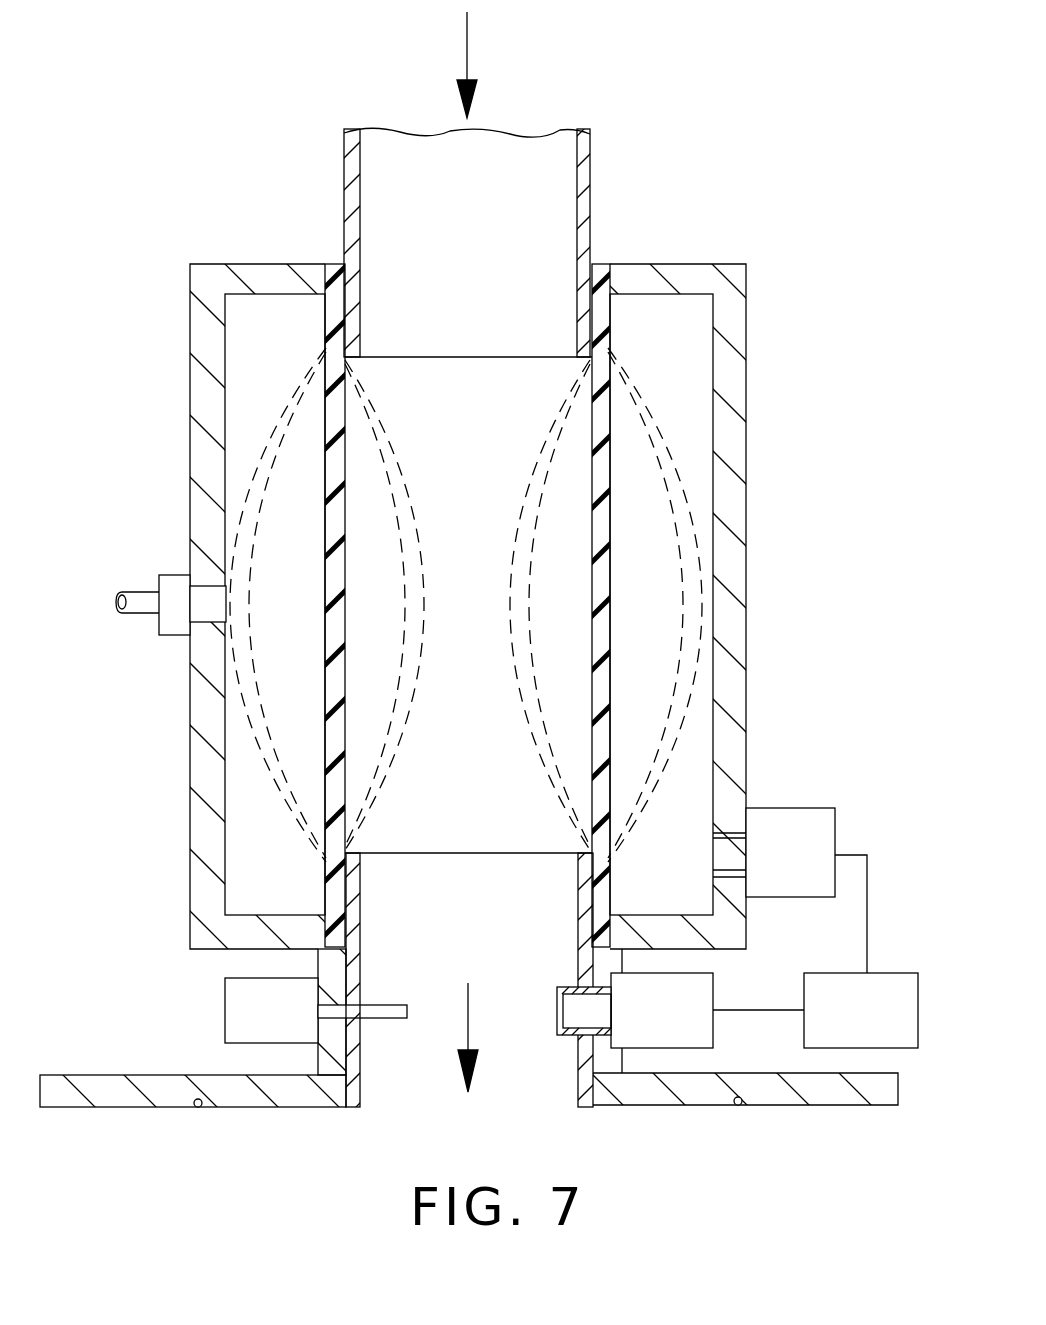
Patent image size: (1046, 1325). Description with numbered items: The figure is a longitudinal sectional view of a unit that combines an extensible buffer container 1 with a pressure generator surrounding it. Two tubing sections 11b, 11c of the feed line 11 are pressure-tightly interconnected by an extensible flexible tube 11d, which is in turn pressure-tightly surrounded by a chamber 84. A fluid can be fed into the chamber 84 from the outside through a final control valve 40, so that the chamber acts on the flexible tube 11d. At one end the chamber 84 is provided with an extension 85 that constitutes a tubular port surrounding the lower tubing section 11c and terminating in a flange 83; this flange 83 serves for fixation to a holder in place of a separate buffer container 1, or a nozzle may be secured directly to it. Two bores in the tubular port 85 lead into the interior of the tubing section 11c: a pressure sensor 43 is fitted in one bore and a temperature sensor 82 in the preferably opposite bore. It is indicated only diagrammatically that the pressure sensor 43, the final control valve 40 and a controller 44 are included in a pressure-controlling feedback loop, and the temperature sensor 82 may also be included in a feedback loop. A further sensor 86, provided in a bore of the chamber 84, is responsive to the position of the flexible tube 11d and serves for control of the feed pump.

The buffer container 1 is at (501, 783).
The feed line 11 is at (427, 242).
The tubing section 11b is at (586, 197).
The extensible flexible tube 11d is at (604, 556).
The tubing section 11c is at (583, 1068).
The chamber 84 is at (730, 495).
The sensor 86 is at (172, 602).
The final control valve 40 is at (812, 877).
The temperature sensor 82 is at (289, 1035).
The extension 85 is at (318, 1063).
The flange 83 is at (122, 1094).
The pressure sensor 43 is at (680, 1030).
The controller 44 is at (888, 1030).